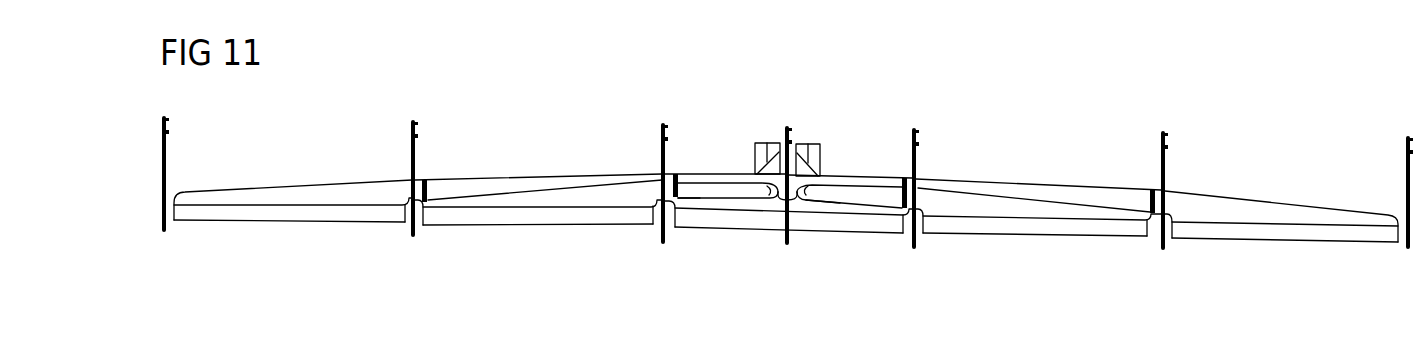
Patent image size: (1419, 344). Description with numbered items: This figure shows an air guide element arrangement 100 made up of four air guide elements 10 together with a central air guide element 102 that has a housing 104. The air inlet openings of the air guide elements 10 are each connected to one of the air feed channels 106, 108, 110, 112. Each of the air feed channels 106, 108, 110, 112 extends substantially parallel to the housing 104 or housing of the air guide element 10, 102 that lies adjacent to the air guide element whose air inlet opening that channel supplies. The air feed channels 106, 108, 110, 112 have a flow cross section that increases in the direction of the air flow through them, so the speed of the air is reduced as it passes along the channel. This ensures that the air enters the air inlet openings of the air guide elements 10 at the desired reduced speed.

The air guide element arrangement 100 is at (1068, 138).
The air guide element 10 is at (322, 195).
The central air guide element 102 is at (805, 207).
The housing 104 is at (759, 200).
The air feed channel 106 is at (458, 187).
The air feed channel 108 is at (705, 192).
The air feed channel 110 is at (865, 193).
The air feed channel 112 is at (1102, 197).